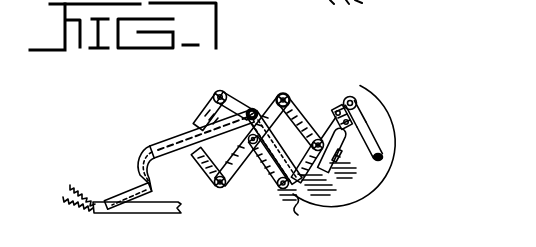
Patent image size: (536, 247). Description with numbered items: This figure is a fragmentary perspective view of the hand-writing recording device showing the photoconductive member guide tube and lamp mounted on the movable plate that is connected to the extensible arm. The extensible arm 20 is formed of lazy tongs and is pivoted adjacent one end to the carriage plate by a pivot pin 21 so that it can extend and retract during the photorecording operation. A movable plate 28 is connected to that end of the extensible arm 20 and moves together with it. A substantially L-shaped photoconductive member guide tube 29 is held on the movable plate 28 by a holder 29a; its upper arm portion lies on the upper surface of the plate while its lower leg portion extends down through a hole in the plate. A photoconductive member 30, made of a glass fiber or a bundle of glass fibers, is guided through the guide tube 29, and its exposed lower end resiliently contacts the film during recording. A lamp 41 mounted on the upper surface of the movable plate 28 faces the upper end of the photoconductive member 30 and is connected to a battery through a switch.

The extensible arm 20 is at (228, 103).
The pivot pin 21 is at (285, 94).
The movable plate 28 is at (383, 173).
The photoconductive member guide tube 29 is at (353, 99).
The holder 29a is at (370, 128).
The photoconductive member 30 is at (344, 101).
The lamp 41 is at (351, 184).